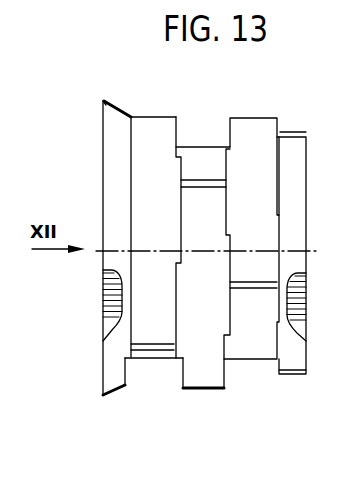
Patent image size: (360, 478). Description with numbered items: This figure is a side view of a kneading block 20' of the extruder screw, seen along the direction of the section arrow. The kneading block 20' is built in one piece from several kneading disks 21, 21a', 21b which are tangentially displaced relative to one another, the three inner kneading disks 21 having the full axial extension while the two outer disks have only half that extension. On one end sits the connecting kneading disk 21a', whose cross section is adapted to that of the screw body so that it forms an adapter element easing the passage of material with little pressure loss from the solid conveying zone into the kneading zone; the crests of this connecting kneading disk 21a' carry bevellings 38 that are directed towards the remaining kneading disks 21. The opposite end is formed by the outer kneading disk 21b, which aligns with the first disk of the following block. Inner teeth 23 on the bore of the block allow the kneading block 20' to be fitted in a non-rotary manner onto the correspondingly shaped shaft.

The kneading block 20' is at (199, 259).
The kneading disks 21 is at (255, 340).
The connecting kneading disk 21a' is at (112, 276).
The outer kneading disk 21b is at (287, 355).
The inner teeth 23 is at (104, 300).
The bevellings 38 is at (115, 101).